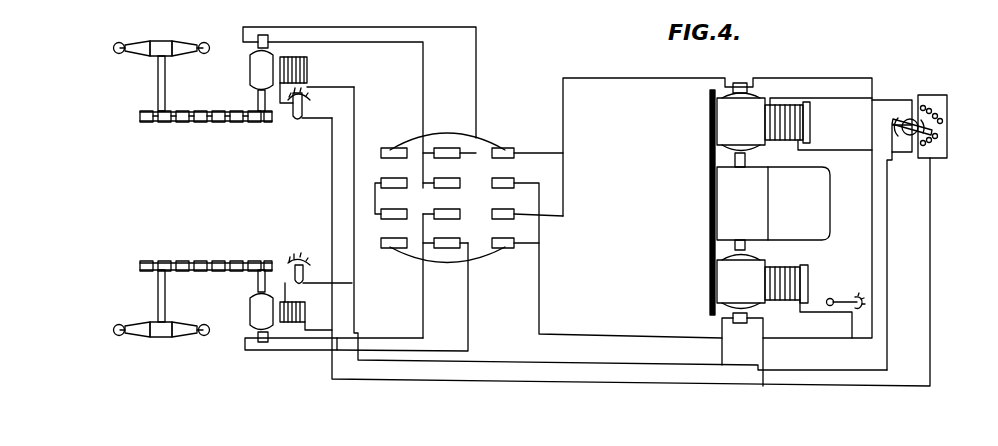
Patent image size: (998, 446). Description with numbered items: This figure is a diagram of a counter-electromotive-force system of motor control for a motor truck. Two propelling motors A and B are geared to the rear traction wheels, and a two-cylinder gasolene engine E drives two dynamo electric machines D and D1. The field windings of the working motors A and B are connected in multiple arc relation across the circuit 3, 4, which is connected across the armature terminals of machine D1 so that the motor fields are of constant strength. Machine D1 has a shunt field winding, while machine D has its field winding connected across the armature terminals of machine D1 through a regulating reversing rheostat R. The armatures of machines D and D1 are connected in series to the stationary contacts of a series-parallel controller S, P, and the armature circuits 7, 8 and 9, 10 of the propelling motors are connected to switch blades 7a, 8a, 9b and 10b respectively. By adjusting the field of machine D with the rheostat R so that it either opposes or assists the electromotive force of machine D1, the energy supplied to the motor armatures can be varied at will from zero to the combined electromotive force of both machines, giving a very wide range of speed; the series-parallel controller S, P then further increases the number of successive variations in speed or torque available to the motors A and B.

The propelling motor A is at (288, 77).
The propelling motor B is at (287, 297).
The circuit 3 is at (620, 228).
The circuit 4 is at (631, 252).
The armature circuit 7 is at (359, 73).
The armature circuit 8 is at (345, 115).
The armature circuit 9 is at (334, 282).
The armature circuit 10 is at (402, 297).
The switch blade 7a is at (451, 157).
The switch blade 8a is at (451, 186).
The switch blade 9b is at (452, 217).
The switch blade 10b is at (455, 241).
The series-parallel controller S is at (440, 192).
The series-parallel controller P is at (607, 229).
The dynamo electric machine D is at (775, 125).
The dynamo electric machine D1 is at (770, 289).
The two-cylinder gasolene engine E is at (757, 202).
The regulating reversing rheostat R is at (918, 232).